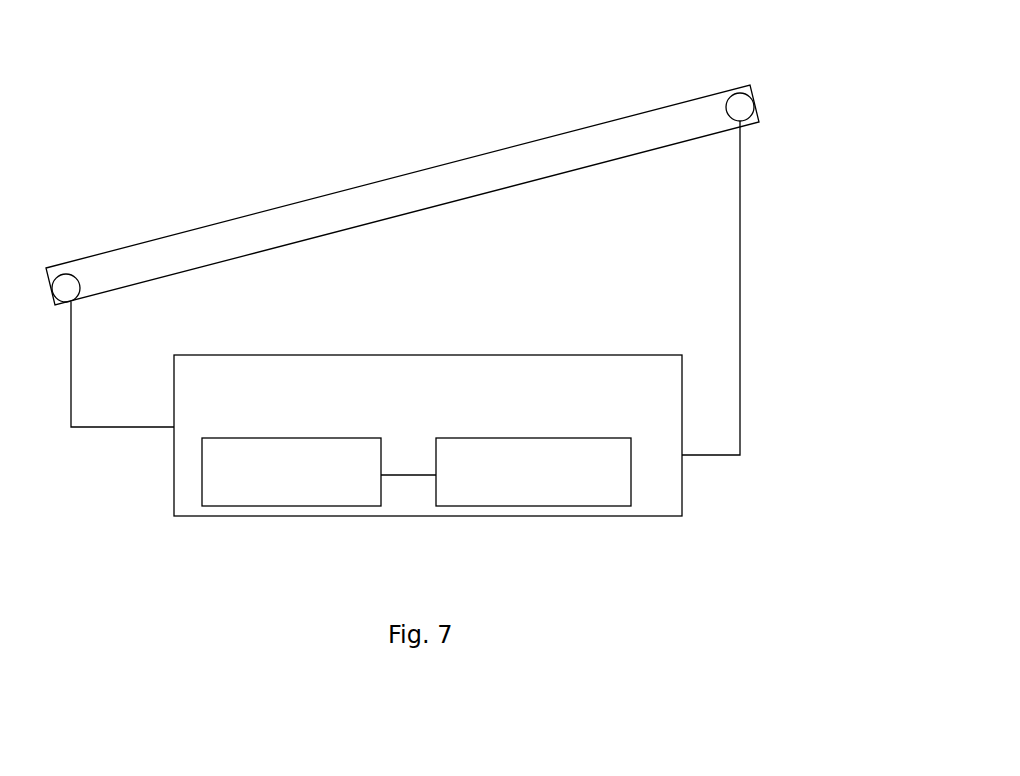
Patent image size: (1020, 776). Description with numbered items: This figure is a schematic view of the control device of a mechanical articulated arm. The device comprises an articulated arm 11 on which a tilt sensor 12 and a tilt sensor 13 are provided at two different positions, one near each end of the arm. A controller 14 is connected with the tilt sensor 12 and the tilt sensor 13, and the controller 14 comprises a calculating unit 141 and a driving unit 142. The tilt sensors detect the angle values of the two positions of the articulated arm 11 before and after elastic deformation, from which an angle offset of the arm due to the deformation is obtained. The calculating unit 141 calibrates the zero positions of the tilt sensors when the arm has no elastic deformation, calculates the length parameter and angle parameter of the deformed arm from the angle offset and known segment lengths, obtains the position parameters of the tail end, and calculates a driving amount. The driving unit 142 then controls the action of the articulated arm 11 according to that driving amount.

The articulated arm 11 is at (421, 171).
The tilt sensor 12 is at (72, 288).
The tilt sensor 13 is at (745, 106).
The controller 14 is at (682, 383).
The calculating unit 141 is at (381, 460).
The driving unit 142 is at (631, 462).